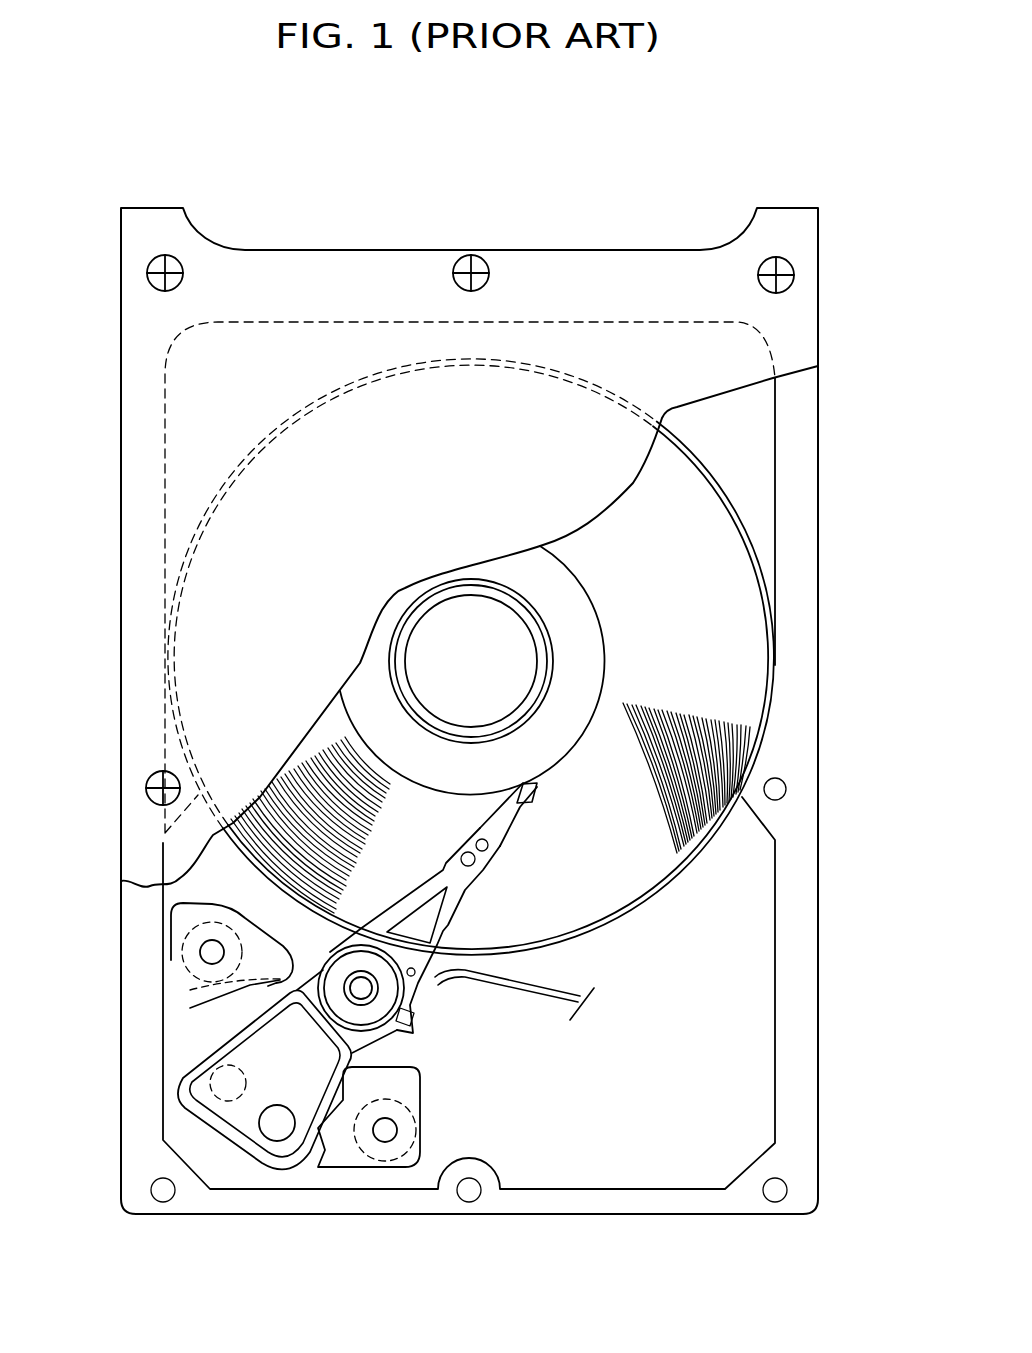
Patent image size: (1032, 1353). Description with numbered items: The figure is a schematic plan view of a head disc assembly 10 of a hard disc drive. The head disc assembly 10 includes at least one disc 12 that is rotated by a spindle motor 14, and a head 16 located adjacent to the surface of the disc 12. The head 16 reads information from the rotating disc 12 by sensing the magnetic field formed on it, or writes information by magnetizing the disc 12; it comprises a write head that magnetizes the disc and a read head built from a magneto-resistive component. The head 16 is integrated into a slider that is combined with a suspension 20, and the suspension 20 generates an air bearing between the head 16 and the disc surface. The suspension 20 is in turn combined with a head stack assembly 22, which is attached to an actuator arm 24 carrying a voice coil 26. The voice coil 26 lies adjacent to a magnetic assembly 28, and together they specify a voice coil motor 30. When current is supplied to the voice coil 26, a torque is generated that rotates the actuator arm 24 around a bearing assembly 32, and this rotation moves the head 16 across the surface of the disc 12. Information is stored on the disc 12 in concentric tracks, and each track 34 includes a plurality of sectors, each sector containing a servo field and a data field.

The head disc assembly 10 is at (606, 170).
The disc 12 is at (726, 594).
The spindle motor 14 is at (445, 633).
The head 16 is at (534, 788).
The suspension 20 is at (518, 806).
The head stack assembly 22 is at (467, 903).
The actuator arm 24 is at (272, 1007).
The voice coil 26 is at (203, 1080).
The magnetic assembly 28 is at (208, 1021).
The voice coil motor 30 is at (330, 1143).
The bearing assembly 32 is at (378, 1005).
The track 34 is at (325, 778).